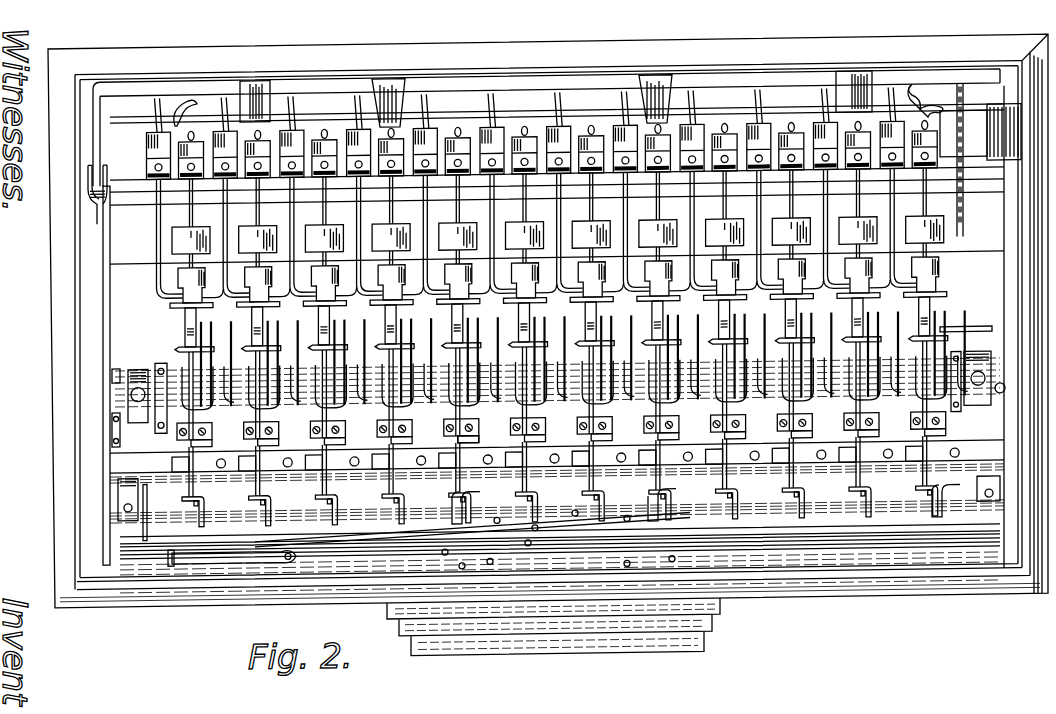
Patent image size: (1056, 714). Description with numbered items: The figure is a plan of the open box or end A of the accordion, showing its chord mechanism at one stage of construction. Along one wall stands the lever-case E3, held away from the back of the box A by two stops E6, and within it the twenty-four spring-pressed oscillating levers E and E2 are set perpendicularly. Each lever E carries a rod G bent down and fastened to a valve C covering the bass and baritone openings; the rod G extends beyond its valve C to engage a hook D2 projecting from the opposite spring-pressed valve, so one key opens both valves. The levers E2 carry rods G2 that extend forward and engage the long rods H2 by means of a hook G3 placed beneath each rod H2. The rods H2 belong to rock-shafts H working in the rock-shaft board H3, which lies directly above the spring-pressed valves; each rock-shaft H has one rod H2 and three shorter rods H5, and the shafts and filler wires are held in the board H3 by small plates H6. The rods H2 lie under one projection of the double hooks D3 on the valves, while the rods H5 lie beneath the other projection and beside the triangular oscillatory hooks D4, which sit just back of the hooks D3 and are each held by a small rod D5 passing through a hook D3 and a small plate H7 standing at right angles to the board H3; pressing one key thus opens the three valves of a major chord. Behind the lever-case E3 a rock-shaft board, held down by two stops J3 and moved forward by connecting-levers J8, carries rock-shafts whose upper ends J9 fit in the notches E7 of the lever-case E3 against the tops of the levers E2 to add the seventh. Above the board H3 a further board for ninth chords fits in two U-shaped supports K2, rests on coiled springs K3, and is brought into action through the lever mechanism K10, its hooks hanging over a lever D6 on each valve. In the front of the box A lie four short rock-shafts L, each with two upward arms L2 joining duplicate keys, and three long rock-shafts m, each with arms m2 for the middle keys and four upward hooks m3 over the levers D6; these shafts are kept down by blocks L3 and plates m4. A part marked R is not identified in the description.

The box A is at (548, 323).
The connecting-levers J8 is at (533, 86).
The upper ends of rock-shafts J9 is at (556, 128).
The stops J3 is at (252, 98).
The notch E7 is at (175, 104).
The stops E6 is at (390, 101).
The lever-case E3 is at (978, 172).
The oscillating levers E is at (932, 192).
The oscillating levers E2 is at (922, 192).
The rods G2 is at (173, 222).
The valve C is at (563, 218).
The rods G is at (193, 264).
The hook G3 is at (966, 316).
The hook D2 is at (183, 302).
The rod H2 is at (186, 342).
The rods H5 is at (270, 326).
The triangular oscillatory hooks D4 is at (966, 356).
The rock-shafts H is at (211, 402).
The small plate H7 is at (543, 432).
The small plates H6 is at (166, 430).
The rock-shaft board H3 is at (965, 345).
The double hooks D3 is at (966, 384).
The small rod D5 is at (103, 412).
The lever D6 is at (256, 478).
The U-shaped supports K2 is at (130, 371).
The coiled springs K3 is at (130, 396).
The lever mechanism K10 is at (172, 562).
The rail R is at (557, 382).
The short rock-shafts L is at (680, 566).
The arms L2 is at (462, 575).
The blocks L3 is at (560, 558).
The long rock-shafts m is at (940, 530).
The arms m2 is at (497, 524).
The hooks m3 is at (180, 500).
The plates m4 is at (450, 504).